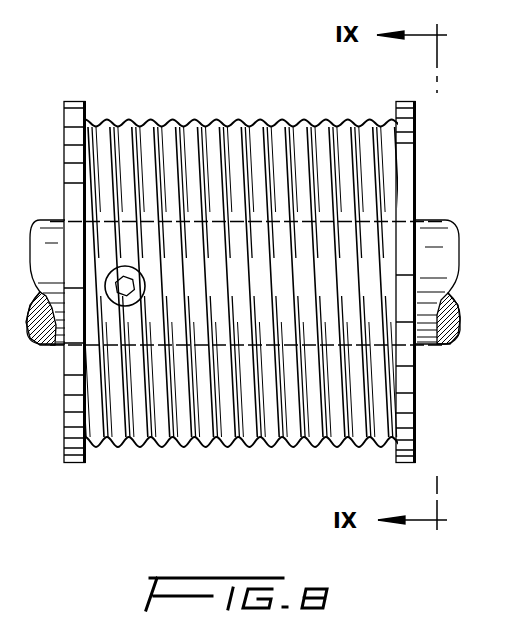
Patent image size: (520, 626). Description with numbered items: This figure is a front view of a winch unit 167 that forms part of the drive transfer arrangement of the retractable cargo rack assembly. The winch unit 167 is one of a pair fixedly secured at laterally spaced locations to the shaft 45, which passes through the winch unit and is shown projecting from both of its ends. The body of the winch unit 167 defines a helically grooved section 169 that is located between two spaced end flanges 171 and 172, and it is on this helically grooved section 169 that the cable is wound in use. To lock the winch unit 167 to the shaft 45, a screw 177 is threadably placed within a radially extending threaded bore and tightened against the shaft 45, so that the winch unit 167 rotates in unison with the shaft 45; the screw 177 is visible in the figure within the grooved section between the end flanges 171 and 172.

The shaft 45 is at (445, 260).
The winch unit 167 is at (242, 237).
The helically grooved section 169 is at (288, 119).
The end flange 171 is at (405, 165).
The end flange 172 is at (85, 108).
The screw 177 is at (127, 288).